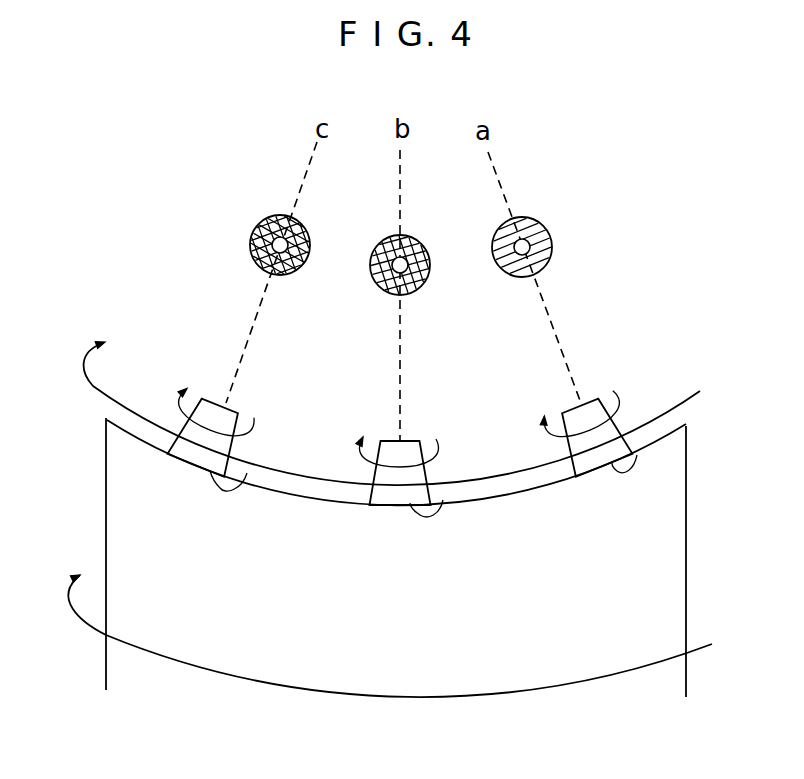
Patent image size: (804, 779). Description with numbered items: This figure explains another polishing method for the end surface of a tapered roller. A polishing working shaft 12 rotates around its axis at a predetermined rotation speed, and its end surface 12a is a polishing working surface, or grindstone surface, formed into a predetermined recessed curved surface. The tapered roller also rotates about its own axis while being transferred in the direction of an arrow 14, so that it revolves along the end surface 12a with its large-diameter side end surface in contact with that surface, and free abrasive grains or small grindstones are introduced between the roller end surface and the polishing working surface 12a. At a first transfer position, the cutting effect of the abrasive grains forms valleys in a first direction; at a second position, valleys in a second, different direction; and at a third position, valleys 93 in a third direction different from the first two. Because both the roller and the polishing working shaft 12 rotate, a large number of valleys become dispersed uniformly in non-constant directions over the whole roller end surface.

The valleys formed in a third direction 93 is at (279, 215).
The polishing working shaft 12 is at (672, 572).
The end surface of the polishing working shaft 12a is at (506, 494).
The arrow indicating transfer direction 14 is at (94, 385).